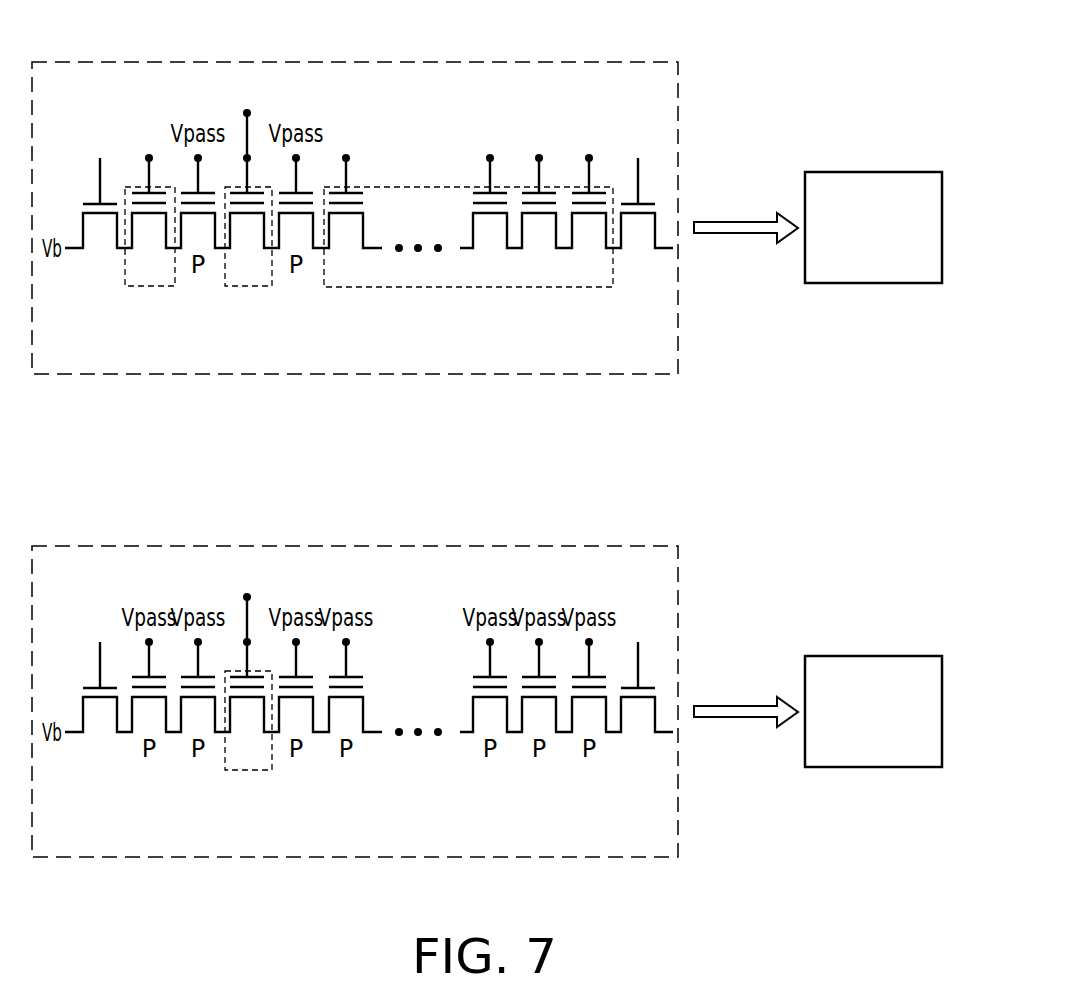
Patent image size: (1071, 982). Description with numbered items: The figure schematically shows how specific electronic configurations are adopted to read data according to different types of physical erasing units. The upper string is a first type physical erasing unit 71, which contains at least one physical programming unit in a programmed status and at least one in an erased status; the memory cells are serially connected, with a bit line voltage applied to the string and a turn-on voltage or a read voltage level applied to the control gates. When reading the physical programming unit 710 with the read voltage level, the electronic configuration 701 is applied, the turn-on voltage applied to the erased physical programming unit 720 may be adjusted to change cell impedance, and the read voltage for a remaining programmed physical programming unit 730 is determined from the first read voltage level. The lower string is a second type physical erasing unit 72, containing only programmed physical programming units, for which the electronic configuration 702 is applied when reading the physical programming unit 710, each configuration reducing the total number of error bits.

The first type physical erasing unit 71 is at (542, 57).
The second type physical erasing unit 72 is at (542, 541).
The first electronic configuration 701 is at (867, 172).
The second electronic configuration 702 is at (867, 656).
The physical programming unit 710 is at (249, 287).
The physical programming unit 720 is at (413, 288).
The physical programming unit 730 is at (150, 287).